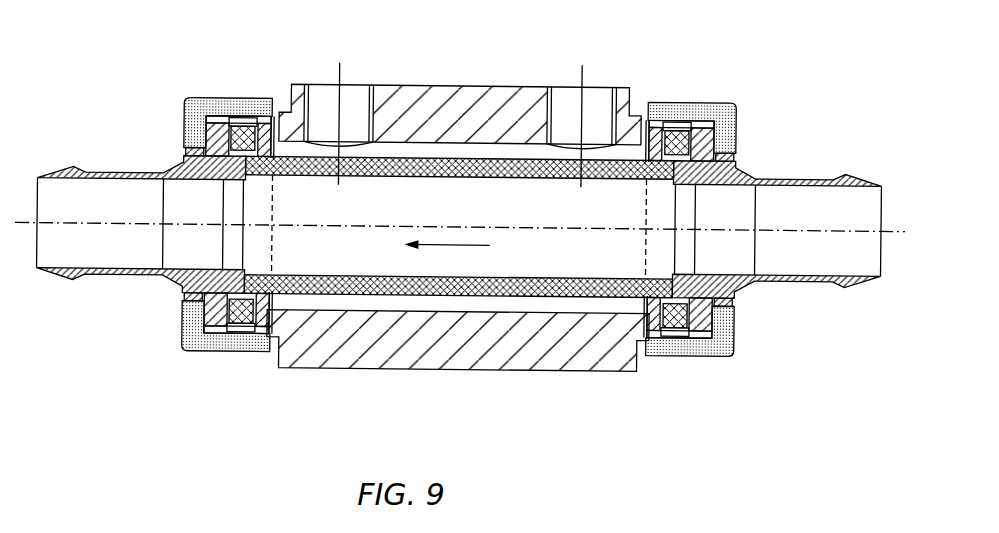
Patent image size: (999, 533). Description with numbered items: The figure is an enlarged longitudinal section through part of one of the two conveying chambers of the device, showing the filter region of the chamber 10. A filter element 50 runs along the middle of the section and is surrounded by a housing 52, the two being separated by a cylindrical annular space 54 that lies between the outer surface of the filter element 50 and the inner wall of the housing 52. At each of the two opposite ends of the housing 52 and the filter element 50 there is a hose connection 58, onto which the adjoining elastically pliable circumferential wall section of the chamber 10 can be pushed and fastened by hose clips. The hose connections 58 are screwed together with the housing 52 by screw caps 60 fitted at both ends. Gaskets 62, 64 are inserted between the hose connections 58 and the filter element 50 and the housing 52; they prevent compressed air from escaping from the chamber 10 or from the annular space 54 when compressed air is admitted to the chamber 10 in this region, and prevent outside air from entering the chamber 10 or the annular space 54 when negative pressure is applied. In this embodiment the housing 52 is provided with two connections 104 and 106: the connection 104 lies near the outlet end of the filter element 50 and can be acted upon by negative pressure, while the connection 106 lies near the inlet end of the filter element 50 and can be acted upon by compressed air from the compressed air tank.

The conveying chamber 10 is at (358, 257).
The filter element 50 is at (488, 303).
The housing 52 is at (556, 346).
The cylindrical annular space 54 is at (478, 92).
The hose connection 58 is at (118, 177).
The screw cap 60 is at (213, 101).
The gasket 62 is at (187, 160).
The gasket 64 is at (247, 320).
The connection 104 is at (350, 101).
The connection 106 is at (591, 99).